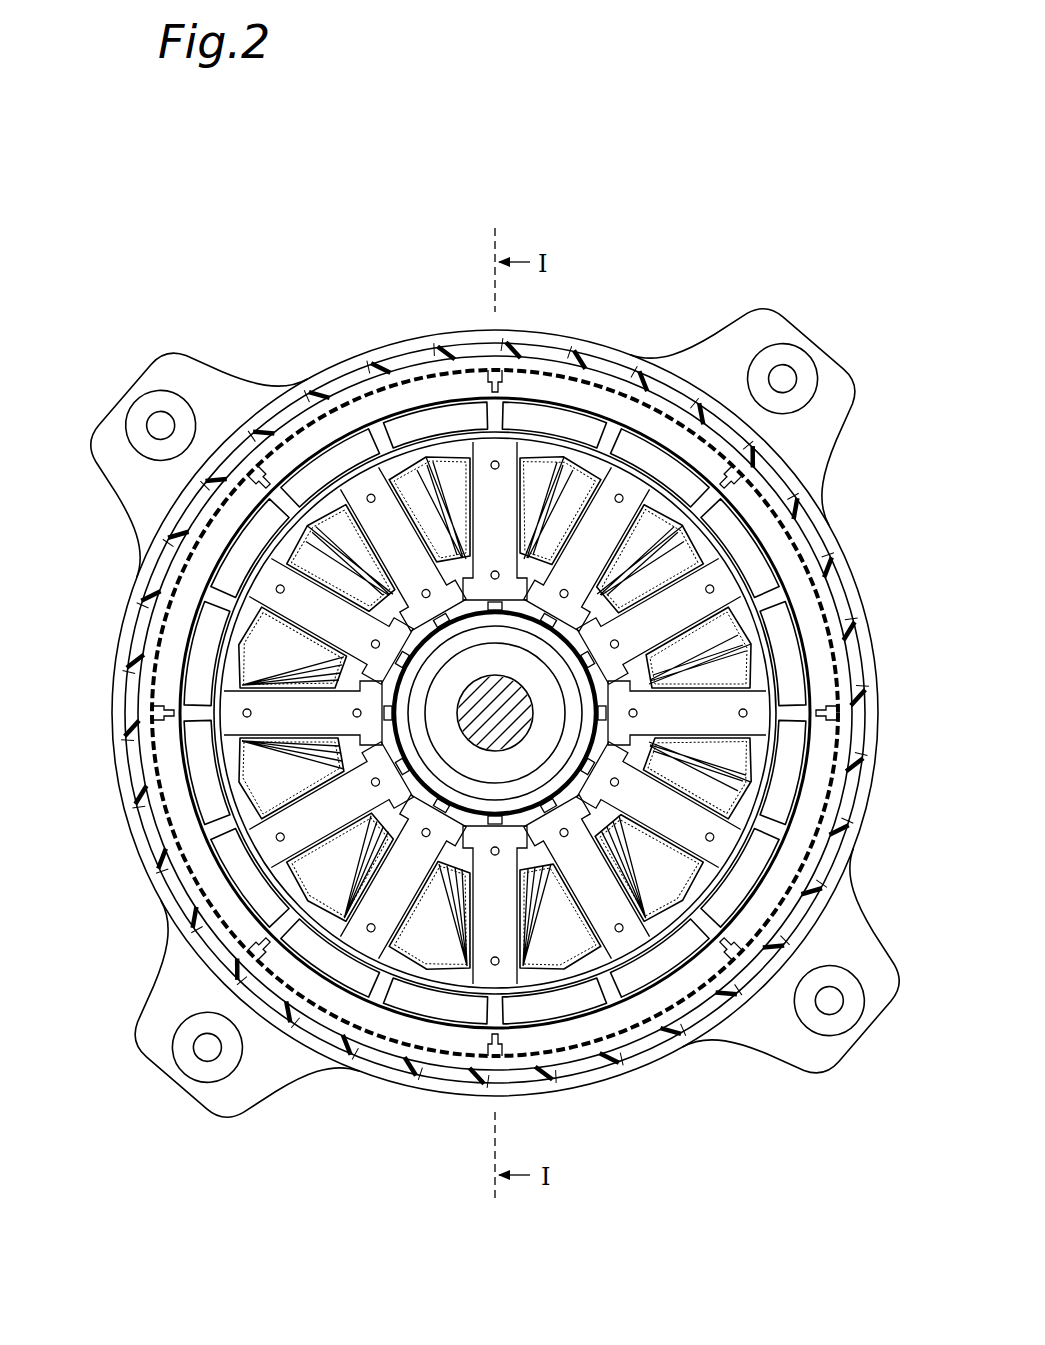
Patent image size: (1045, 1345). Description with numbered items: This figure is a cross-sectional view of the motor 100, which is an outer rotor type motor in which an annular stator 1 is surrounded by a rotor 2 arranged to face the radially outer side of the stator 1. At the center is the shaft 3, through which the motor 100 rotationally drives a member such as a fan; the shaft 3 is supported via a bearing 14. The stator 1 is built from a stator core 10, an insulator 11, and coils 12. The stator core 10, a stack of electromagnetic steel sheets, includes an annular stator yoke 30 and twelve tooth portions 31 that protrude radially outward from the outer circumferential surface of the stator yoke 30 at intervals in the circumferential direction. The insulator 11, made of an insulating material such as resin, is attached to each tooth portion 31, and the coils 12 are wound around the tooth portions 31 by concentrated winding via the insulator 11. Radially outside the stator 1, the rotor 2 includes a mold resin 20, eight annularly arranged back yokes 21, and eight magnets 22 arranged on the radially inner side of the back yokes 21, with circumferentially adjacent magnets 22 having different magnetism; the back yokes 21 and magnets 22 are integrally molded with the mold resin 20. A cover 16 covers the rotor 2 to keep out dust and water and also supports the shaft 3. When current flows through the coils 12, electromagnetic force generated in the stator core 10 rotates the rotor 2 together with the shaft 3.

The motor 100 is at (748, 283).
The stator 1 is at (777, 763).
The rotor 2 is at (599, 388).
The shaft 3 is at (500, 730).
The stator core 10 is at (684, 601).
The insulator 11 is at (518, 940).
The coils 12 is at (413, 937).
The bearing 14 is at (437, 716).
The cover 16 is at (148, 600).
The mold resin 20 is at (153, 853).
The back yokes 21 is at (348, 432).
The magnets 22 is at (425, 430).
The stator yoke 30 is at (641, 722).
The tooth portions 31 is at (773, 702).